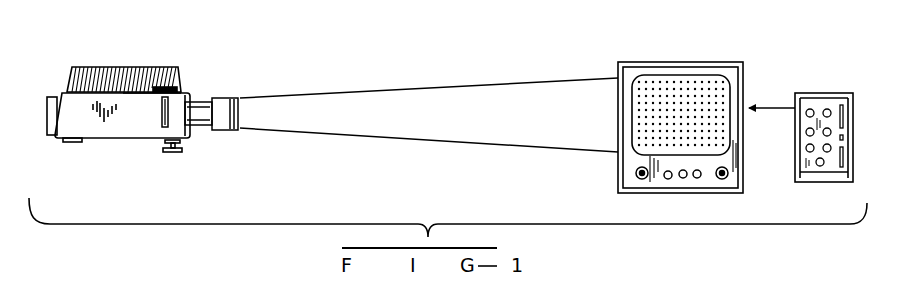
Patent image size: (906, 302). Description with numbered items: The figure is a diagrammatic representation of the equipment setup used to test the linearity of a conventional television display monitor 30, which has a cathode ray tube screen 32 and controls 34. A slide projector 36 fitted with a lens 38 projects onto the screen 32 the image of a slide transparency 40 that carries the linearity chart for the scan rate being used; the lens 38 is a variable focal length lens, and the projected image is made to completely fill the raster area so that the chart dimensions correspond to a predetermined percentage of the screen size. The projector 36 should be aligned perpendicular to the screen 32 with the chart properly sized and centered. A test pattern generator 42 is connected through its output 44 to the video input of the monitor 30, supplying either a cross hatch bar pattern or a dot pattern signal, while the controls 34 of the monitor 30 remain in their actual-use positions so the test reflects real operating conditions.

The television display monitor 30 is at (650, 62).
The cathode ray tube screen 32 is at (686, 88).
The controls 34 is at (698, 184).
The slide projector 36 is at (133, 56).
The lens 38 is at (223, 98).
The slide transparency 40 is at (160, 110).
The test pattern generator 42 is at (826, 89).
The output 44 is at (772, 107).